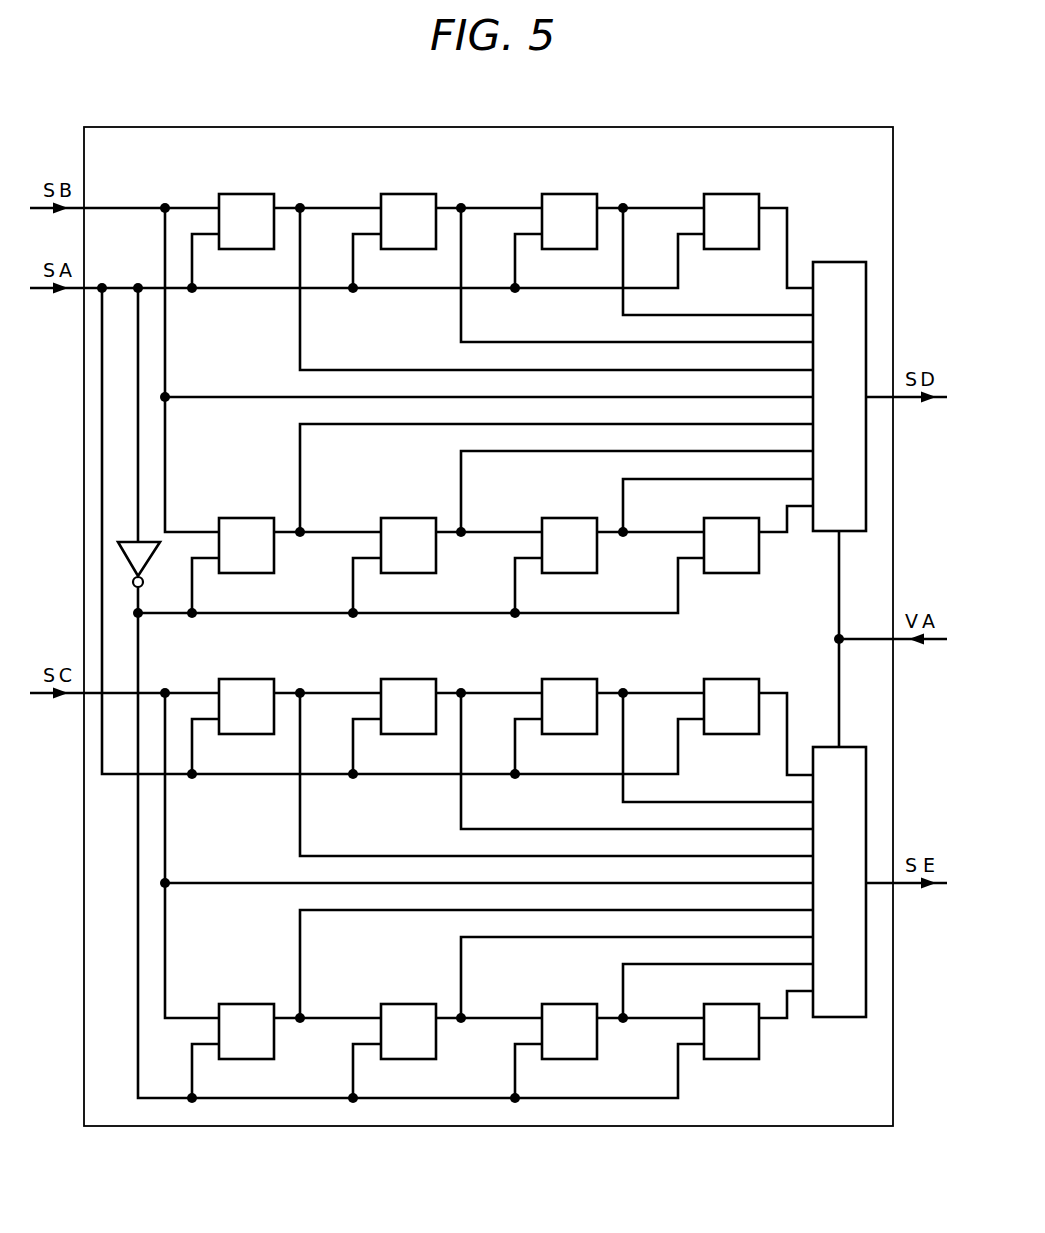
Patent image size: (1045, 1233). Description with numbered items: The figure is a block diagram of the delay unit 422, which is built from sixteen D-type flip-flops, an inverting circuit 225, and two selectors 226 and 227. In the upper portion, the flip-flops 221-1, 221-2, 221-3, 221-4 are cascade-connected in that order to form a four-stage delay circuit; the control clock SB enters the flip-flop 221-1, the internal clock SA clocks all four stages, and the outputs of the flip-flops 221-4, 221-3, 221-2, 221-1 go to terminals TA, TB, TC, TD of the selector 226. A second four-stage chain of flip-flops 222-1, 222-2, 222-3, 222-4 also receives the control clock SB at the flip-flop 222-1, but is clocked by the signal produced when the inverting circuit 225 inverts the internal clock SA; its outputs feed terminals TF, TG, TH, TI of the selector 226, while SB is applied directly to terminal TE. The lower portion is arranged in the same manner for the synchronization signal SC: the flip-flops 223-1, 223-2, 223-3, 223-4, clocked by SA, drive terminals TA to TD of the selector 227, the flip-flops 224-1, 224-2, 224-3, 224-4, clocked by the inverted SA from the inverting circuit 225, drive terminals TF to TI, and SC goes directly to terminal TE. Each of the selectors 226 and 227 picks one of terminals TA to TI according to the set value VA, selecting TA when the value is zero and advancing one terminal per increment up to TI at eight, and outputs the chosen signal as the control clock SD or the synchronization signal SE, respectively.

The D-type flip-flop 221-1 is at (247, 194).
The D-type flip-flop 221-2 is at (409, 194).
The D-type flip-flop 221-3 is at (570, 194).
The D-type flip-flop 221-4 is at (732, 194).
The D-type flip-flop 222-1 is at (233, 573).
The D-type flip-flop 222-2 is at (395, 573).
The D-type flip-flop 222-3 is at (556, 573).
The D-type flip-flop 222-4 is at (718, 573).
The D-type flip-flop 223-1 is at (233, 679).
The D-type flip-flop 223-2 is at (395, 679).
The D-type flip-flop 223-3 is at (556, 679).
The D-type flip-flop 223-4 is at (718, 679).
The D-type flip-flop 224-1 is at (233, 1059).
The D-type flip-flop 224-2 is at (395, 1059).
The D-type flip-flop 224-3 is at (556, 1059).
The D-type flip-flop 224-4 is at (718, 1059).
The inverting circuit 225 is at (165, 541).
The selector 226 is at (838, 262).
The selector 227 is at (838, 1017).
The delay unit 422 is at (885, 127).